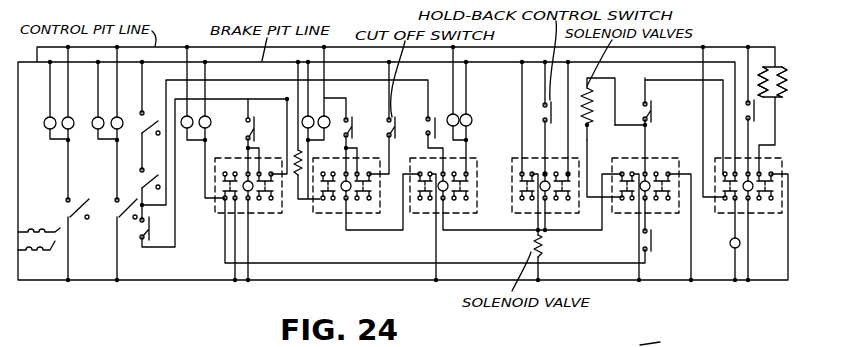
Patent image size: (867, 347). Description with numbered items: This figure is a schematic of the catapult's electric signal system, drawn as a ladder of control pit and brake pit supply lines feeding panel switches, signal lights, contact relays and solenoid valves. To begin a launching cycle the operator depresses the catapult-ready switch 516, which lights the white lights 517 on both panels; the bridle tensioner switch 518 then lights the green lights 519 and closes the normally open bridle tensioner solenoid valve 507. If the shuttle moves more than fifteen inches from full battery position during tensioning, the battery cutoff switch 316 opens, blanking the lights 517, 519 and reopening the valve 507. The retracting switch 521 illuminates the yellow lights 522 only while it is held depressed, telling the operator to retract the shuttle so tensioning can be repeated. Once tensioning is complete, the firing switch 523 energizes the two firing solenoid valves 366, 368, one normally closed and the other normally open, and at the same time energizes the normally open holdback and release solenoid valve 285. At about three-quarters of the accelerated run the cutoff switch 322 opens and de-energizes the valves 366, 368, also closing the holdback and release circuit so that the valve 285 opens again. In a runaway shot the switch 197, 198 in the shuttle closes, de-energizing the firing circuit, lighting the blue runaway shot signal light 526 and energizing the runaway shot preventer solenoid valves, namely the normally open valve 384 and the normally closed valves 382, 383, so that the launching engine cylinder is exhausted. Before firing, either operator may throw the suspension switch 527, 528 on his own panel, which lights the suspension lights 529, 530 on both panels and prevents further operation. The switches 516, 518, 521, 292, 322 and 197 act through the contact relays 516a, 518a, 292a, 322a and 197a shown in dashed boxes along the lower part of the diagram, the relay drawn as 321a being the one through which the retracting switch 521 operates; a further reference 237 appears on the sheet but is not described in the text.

The suspension lights 530 is at (68, 141).
The suspension lights 529 is at (117, 141).
The suspension switch 528 is at (67, 201).
The suspension switch 527 is at (115, 201).
The battery cutoff switch 316 is at (183, 228).
The white lights 517 is at (209, 116).
The catapult-ready switch 516 is at (254, 125).
The green lights 519 is at (312, 117).
The bridle tensioner switch 518 is at (352, 124).
The retracting switch 521 is at (434, 123).
The yellow lights 522 is at (469, 114).
The switch 292 is at (544, 119).
The solenoid valve 368 is at (592, 100).
The solenoid valve 366 is at (590, 118).
The air pressure cutoff switch 322 is at (651, 108).
The runaway shot preventer switch 197 is at (747, 111).
The runaway shot preventer switch 198 is at (700, 124).
The solenoid valve 382 is at (758, 78).
The solenoid valve 383 is at (772, 72).
The solenoid valve 384 is at (785, 77).
The bridle tensioner solenoid valve 507 is at (292, 172).
The contact relay 516a is at (272, 218).
The contact relay 518a is at (337, 218).
The relay 321a is at (422, 217).
The contact relay 292a is at (525, 216).
The contact relay 322a is at (627, 216).
The contact relay 197a is at (768, 216).
The holdback and release solenoid valve 285 is at (545, 246).
The firing switch 523 is at (651, 245).
The runaway shot signal light 526 is at (730, 246).
The conductor 237 is at (657, 333).